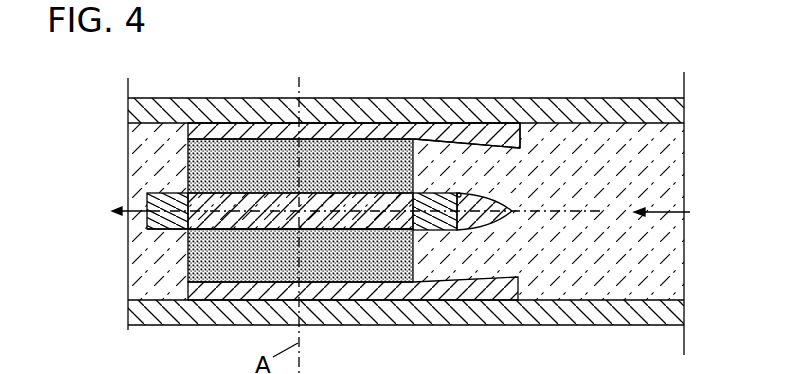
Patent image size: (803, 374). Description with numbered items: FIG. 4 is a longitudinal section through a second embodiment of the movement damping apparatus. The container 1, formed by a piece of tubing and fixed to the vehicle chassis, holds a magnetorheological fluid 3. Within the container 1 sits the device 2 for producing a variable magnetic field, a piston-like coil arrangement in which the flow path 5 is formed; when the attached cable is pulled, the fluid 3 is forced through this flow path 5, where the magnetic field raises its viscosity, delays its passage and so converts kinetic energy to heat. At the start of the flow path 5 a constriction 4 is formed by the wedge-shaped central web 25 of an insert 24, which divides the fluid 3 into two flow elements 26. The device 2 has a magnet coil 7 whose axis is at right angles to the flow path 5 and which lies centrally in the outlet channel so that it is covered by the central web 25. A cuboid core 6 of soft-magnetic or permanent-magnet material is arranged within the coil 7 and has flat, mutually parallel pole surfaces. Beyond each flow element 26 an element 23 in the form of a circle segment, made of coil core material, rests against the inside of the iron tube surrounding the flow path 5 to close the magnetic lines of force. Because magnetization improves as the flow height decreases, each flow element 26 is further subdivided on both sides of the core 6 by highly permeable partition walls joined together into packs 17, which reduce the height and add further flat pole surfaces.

The container 1 is at (610, 110).
The device for production of a variable magnetic field 2 is at (177, 123).
The magnetorheological fluid 3 is at (632, 255).
The constriction 4 is at (513, 165).
The flow path 5 is at (329, 132).
The core 6 is at (188, 235).
The magnet coil 7 is at (167, 212).
The packs 17 is at (373, 124).
The element (pole cap) 23 is at (222, 132).
The insert 24 is at (450, 122).
The wedge-shaped central web 25 is at (497, 219).
The flow elements 26 is at (447, 170).